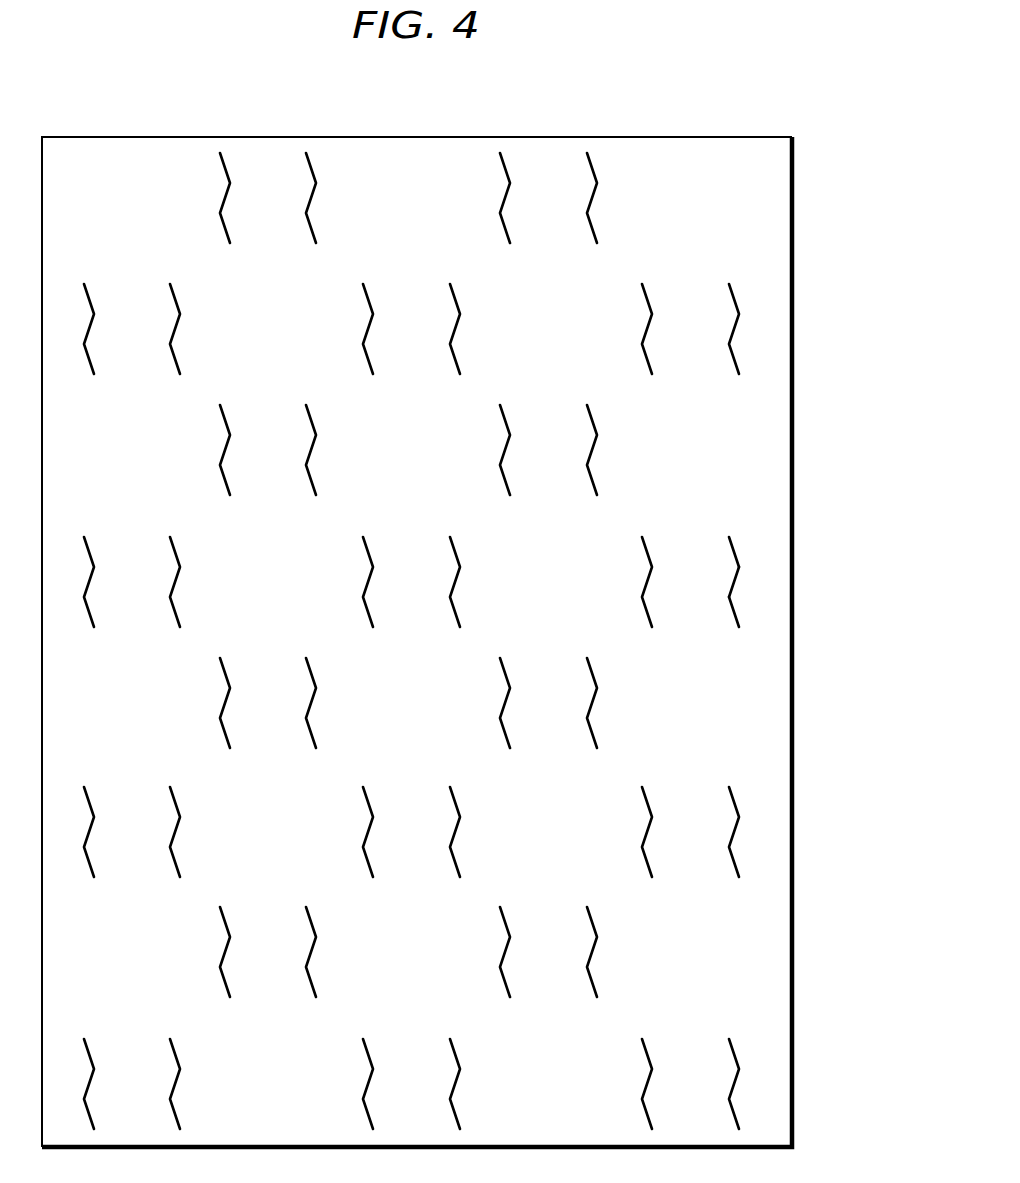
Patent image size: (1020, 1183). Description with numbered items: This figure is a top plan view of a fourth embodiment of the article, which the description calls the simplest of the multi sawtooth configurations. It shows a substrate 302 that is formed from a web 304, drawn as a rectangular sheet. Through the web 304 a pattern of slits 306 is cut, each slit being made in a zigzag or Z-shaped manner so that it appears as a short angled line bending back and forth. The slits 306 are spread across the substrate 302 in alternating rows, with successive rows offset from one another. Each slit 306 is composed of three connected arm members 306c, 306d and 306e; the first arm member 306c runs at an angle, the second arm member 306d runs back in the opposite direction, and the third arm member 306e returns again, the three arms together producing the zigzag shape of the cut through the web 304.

The substrate 302 is at (660, 58).
The web 304 is at (747, 218).
The slits 306 is at (733, 335).
The arm member 306c is at (735, 543).
The arm member 306d is at (733, 581).
The arm member 306e is at (735, 616).